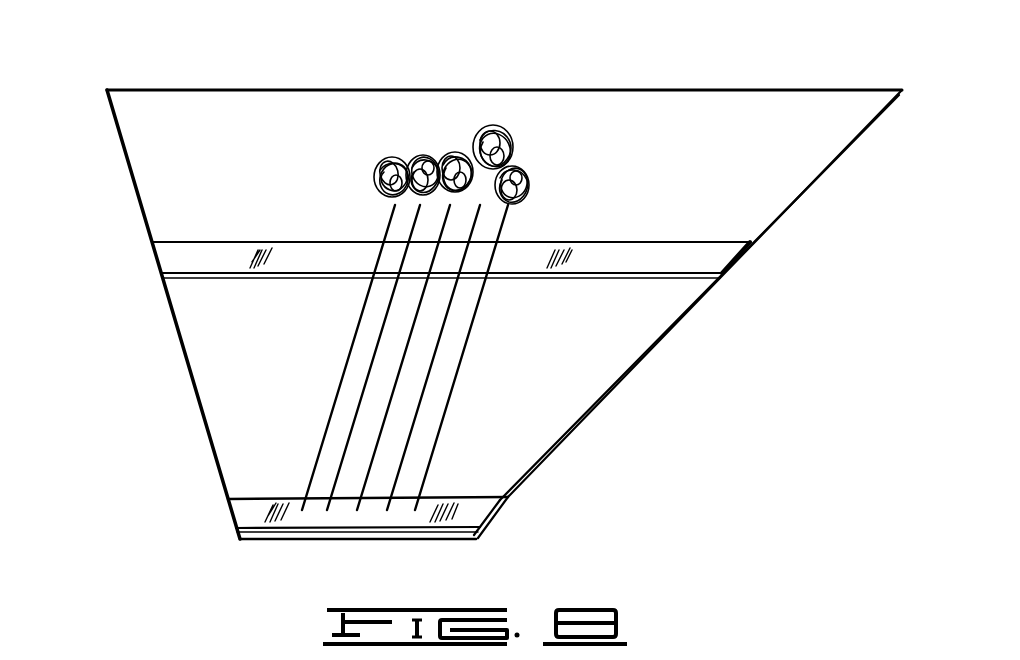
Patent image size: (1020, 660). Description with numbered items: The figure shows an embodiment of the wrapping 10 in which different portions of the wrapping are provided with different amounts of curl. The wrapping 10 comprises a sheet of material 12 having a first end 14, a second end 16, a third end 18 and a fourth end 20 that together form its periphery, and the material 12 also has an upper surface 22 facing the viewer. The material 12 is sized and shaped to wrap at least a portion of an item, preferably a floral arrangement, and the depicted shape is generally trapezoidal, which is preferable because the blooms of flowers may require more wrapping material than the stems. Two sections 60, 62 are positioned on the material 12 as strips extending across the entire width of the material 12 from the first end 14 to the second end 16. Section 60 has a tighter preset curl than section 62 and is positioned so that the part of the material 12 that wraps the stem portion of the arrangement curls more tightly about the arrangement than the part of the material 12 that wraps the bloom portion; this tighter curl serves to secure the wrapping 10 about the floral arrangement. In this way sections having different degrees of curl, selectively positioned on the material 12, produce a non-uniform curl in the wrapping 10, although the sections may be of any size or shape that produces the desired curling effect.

The wrapping 10 is at (152, 79).
The material 12 is at (731, 90).
The first end 14 is at (172, 320).
The second end 16 is at (660, 344).
The third end 18 is at (365, 538).
The fourth end 20 is at (396, 90).
The upper surface 22 is at (238, 415).
The section 60 is at (473, 517).
The section 62 is at (640, 253).